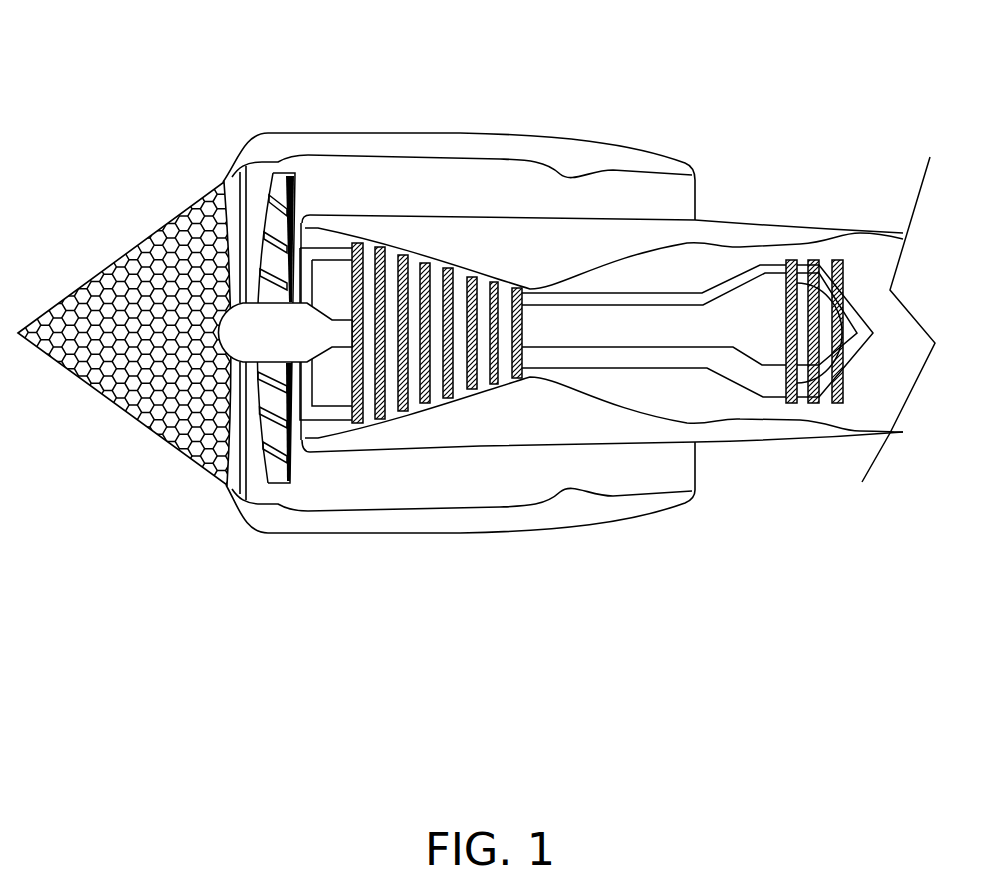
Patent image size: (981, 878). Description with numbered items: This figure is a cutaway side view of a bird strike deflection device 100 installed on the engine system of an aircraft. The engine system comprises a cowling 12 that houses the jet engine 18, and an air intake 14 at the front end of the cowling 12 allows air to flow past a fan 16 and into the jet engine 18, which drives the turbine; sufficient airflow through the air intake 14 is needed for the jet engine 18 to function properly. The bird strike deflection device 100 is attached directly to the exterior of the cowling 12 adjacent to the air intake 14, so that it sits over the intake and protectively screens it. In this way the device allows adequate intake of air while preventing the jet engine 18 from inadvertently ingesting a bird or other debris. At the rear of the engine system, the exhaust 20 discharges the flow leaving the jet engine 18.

The bird strike deflection device 100 is at (88, 197).
The cowling 12 is at (327, 522).
The air intake 14 is at (226, 368).
The fan 16 is at (289, 178).
The jet engine 18 is at (530, 272).
The exhaust duct 20 is at (810, 233).